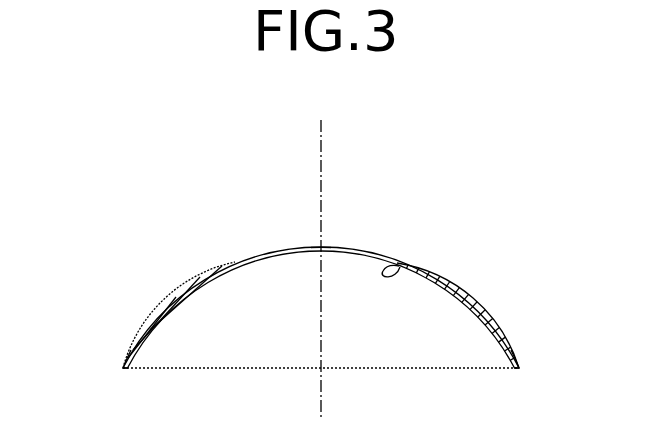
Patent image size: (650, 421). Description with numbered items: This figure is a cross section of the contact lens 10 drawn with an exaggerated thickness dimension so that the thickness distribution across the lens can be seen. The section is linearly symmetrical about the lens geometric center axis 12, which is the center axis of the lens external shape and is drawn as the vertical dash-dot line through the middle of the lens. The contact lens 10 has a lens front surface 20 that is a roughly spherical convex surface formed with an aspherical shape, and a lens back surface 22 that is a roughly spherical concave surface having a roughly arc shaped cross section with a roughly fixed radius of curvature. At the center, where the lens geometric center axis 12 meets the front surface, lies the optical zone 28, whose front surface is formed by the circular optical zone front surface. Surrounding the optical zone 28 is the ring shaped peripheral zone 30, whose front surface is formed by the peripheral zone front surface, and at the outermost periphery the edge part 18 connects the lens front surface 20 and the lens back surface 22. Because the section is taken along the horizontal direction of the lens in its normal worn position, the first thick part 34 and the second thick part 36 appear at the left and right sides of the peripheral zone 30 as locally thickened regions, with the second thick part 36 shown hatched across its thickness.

The contact lens 10 is at (313, 269).
The lens geometric center axis 12 is at (321, 187).
The edge part 18 is at (118, 364).
The lens front surface 20 is at (286, 249).
The lens back surface 22 is at (400, 267).
The optical zone 28 is at (326, 243).
The peripheral zone 30 is at (516, 339).
The first thick part 34 is at (192, 281).
The second thick part 36 is at (447, 277).